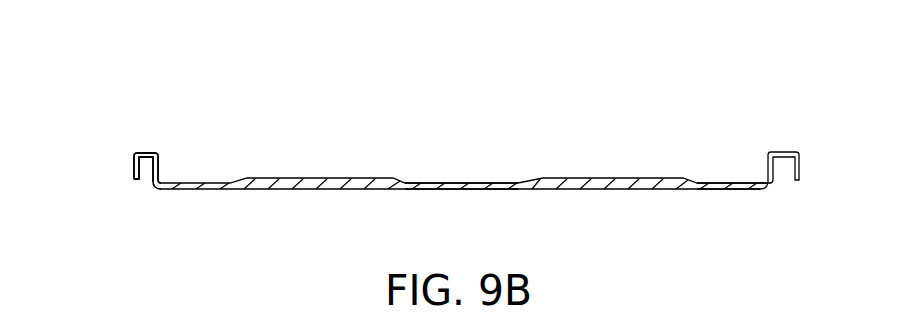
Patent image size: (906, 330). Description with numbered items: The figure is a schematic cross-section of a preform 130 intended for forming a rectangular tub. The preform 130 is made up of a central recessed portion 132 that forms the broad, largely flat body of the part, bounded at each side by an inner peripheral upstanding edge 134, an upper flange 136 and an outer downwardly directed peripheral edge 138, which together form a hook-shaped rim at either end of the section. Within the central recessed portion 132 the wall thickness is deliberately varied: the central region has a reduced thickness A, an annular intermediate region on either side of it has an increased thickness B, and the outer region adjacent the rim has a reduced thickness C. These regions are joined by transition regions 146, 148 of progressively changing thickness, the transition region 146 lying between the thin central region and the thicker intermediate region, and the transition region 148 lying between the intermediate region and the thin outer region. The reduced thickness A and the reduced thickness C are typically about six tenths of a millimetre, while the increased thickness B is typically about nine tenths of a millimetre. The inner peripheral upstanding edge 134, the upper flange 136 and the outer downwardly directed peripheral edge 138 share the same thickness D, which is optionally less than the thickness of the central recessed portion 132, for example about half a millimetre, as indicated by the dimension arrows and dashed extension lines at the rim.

The preform 130 is at (137, 153).
The central recessed portion 132 is at (325, 178).
The inner peripheral upstanding edge 134 is at (159, 167).
The upper flange 136 is at (141, 153).
The outer downwardly directed peripheral edge 138 is at (131, 170).
The transition region 146 is at (497, 189).
The transition region 148 is at (683, 190).
The reduced thickness A is at (427, 155).
The increased thickness B is at (613, 155).
The reduced thickness C is at (191, 157).
The thickness D is at (773, 150).